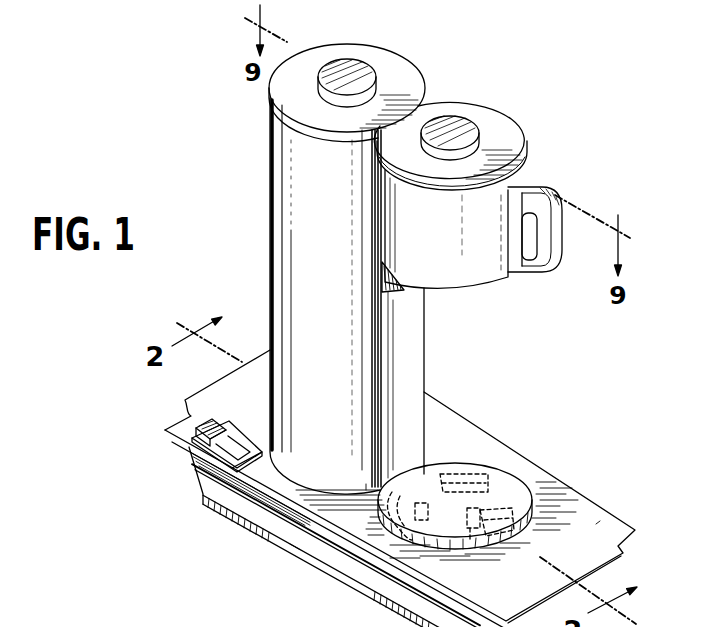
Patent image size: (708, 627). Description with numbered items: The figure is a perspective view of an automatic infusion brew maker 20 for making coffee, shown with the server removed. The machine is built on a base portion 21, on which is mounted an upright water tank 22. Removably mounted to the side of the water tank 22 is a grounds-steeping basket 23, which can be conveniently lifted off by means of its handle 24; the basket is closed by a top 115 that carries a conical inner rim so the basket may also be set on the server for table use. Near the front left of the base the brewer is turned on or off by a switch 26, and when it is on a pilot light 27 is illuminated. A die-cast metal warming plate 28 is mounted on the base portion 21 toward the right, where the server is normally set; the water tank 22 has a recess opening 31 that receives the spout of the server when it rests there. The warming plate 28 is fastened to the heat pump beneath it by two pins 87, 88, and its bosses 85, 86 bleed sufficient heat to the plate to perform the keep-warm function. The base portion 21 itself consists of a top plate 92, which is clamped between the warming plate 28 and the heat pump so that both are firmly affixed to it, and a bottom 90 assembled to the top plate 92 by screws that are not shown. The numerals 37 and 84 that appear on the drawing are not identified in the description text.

The automatic infusion brew maker 20 is at (244, 186).
The base portion 21 is at (207, 508).
The water tank 22 is at (295, 258).
The grounds-steeping basket 23 is at (467, 273).
The handle 24 is at (557, 247).
The switch 26 is at (198, 428).
The pilot light 27 is at (245, 446).
The warming plate 28 is at (517, 463).
The recess opening 31 is at (400, 290).
The housing lid 37 is at (405, 72).
The hidden pad 84 is at (467, 465).
The boss 85 is at (372, 488).
The boss 86 is at (532, 522).
The pin 87 is at (420, 517).
The pin 88 is at (480, 517).
The bottom 90 is at (290, 546).
The top plate 92 is at (598, 522).
The top 115 is at (497, 125).